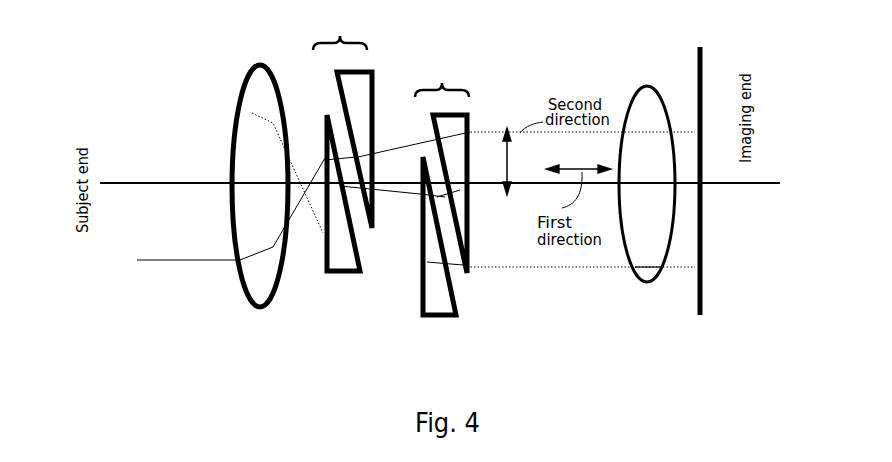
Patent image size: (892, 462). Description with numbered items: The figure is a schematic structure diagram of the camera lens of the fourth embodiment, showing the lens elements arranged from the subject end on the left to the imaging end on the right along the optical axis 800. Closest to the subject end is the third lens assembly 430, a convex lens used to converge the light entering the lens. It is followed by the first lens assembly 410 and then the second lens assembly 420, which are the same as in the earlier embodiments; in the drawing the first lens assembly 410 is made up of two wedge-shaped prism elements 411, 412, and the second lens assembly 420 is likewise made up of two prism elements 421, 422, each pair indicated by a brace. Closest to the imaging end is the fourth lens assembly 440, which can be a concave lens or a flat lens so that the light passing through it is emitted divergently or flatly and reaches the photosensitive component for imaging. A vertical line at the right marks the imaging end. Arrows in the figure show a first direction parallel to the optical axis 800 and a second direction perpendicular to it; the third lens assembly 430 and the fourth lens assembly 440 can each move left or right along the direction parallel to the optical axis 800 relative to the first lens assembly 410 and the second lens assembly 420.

The third lens assembly 430 is at (257, 87).
The first lens assembly 410 is at (342, 42).
The first prism of first prism group 411 is at (350, 252).
The second prism of first prism group 412 is at (372, 92).
The second lens assembly 420 is at (447, 88).
The first prism of second prism group 421 is at (422, 306).
The second prism of second prism group 422 is at (456, 118).
The fourth lens assembly 440 is at (646, 110).
The optical axis 800 is at (738, 184).